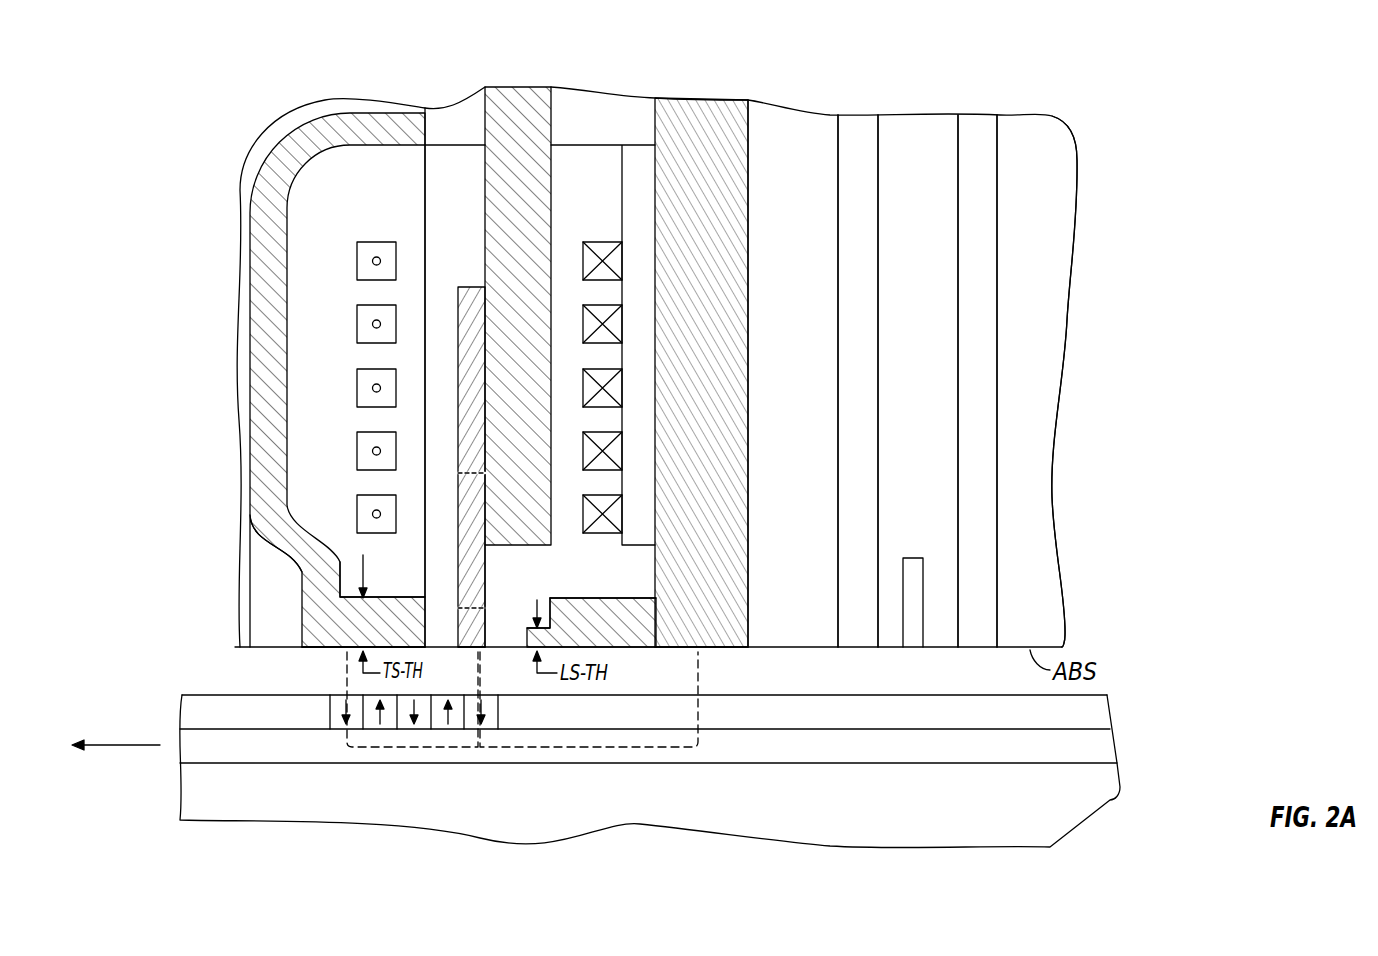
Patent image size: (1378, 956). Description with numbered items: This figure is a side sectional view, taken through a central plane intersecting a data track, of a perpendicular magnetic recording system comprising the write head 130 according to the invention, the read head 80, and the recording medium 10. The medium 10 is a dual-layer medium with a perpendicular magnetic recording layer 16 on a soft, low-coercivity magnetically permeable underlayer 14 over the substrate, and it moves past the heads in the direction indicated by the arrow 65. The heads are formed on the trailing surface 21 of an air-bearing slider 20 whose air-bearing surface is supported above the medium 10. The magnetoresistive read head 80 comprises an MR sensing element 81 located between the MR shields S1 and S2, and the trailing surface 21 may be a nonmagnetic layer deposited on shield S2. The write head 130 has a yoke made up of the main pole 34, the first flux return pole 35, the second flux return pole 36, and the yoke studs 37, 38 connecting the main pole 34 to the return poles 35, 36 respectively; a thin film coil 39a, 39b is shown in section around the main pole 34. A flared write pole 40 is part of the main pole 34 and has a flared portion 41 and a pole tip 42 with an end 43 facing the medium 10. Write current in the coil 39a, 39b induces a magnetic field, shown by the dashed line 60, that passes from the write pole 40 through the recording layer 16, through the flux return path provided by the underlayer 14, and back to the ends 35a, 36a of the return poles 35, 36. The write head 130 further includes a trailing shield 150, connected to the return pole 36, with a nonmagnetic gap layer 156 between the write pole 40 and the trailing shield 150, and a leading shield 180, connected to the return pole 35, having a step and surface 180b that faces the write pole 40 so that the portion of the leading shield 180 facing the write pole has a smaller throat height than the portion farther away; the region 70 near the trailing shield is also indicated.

The write head 130 is at (798, 93).
The yoke stud 38 is at (463, 115).
The yoke stud 37 is at (592, 103).
The magnetoresistive read head 80 is at (998, 92).
The main pole 34 is at (546, 198).
The second flux return pole 36 is at (257, 232).
The trailing surface 21 is at (748, 213).
The flared write pole 40 is at (482, 290).
The thin film coil 39b is at (350, 242).
The thin film coil 39a is at (630, 242).
The first flux return pole 35 is at (733, 435).
The air-bearing slider 20 is at (1057, 382).
The flared portion 41 is at (487, 587).
The pole tip 42 is at (487, 618).
The step and surface 180b is at (547, 602).
The shield notch 70 is at (348, 597).
The trailing shield 150 is at (353, 640).
The MR shield S2 is at (853, 550).
The MR shield S1 is at (987, 598).
The end of return pole 36a is at (313, 648).
The end of pole tip 43 is at (473, 657).
The leading shield 180 is at (623, 650).
The end of return pole 35a is at (717, 650).
The MR sensing element 81 is at (915, 650).
The nonmagnetic gap layer 156 is at (515, 637).
The recording layer 16 is at (1100, 712).
The soft underlayer 14 is at (1103, 748).
The arrow 65 is at (117, 745).
The magnetic field 60 is at (423, 748).
The medium 10 is at (1100, 826).